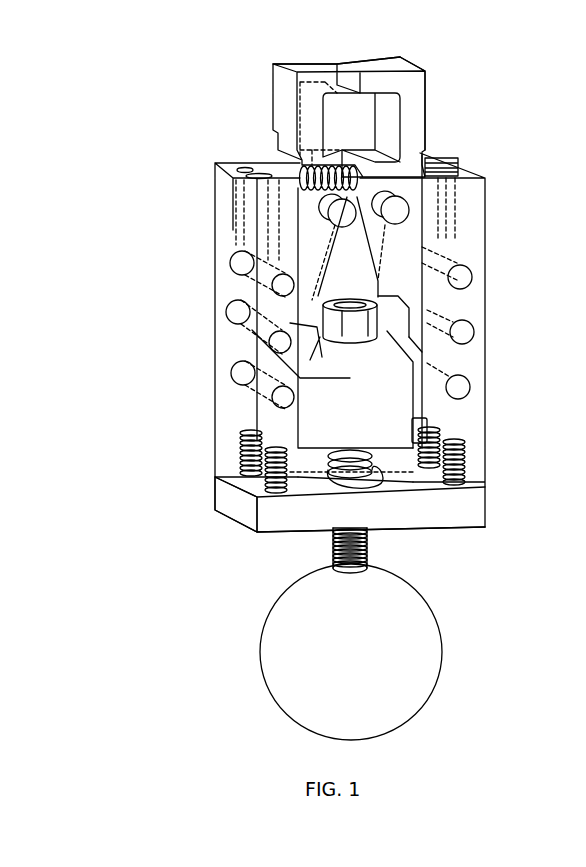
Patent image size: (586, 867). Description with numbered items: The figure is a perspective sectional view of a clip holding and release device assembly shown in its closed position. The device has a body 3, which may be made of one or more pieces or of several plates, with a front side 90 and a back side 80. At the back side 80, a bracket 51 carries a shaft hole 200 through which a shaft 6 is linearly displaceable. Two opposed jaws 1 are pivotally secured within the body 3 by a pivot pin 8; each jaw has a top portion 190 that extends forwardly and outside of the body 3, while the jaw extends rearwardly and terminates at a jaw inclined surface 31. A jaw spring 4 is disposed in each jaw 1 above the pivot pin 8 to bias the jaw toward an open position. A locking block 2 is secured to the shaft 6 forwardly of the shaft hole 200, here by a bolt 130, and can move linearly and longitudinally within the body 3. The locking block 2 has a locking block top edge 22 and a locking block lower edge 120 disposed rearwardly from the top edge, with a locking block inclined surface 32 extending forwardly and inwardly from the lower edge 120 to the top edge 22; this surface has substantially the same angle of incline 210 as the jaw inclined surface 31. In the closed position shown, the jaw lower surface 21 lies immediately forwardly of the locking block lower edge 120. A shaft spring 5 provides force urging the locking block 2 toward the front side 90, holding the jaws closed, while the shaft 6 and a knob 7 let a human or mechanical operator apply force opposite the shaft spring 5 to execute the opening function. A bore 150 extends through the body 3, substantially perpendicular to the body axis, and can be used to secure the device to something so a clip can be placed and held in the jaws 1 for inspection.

The jaw 1 is at (313, 65).
The locking block 2 is at (404, 450).
The body 3 is at (467, 212).
The jaw spring 4 is at (287, 167).
The shaft spring 5 is at (397, 512).
The shaft 6 is at (341, 553).
The knob 7 is at (430, 643).
The pivot pin 8 is at (243, 222).
The jaw lower surface 21 is at (392, 376).
The locking block top edge 22 is at (414, 420).
The jaw inclined surface 31 is at (383, 307).
The locking block inclined surface 32 is at (297, 343).
The bracket 51 is at (238, 502).
The back side 80 is at (267, 537).
The front side 90 is at (352, 47).
The locking block lower edge 120 is at (285, 358).
The bolt 130 is at (333, 298).
The bore 150 is at (463, 275).
The top portion 190 is at (428, 64).
The shaft hole 200 is at (368, 532).
The angle of incline 210 is at (395, 350).